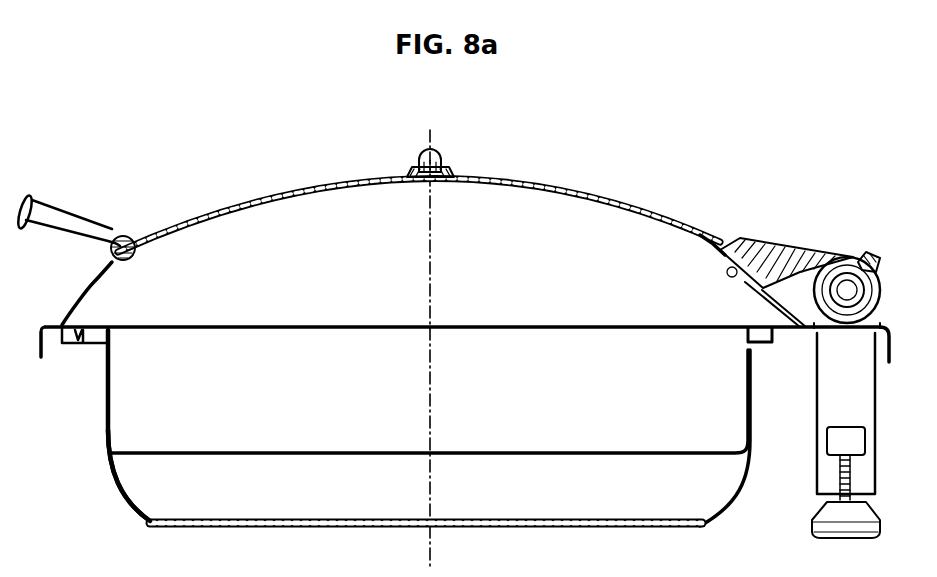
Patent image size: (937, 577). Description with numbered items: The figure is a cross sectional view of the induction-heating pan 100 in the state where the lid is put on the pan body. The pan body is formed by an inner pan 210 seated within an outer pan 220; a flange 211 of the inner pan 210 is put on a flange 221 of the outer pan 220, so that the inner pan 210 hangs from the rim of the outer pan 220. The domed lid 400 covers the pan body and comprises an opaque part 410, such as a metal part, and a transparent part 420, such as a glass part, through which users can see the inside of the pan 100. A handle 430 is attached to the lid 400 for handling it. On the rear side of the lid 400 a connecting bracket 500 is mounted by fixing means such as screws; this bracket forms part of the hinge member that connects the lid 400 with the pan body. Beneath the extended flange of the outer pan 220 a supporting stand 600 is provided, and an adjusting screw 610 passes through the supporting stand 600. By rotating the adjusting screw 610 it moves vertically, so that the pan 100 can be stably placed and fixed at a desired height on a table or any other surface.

The induction-heating pan 100 is at (232, 190).
The inner pan 210 is at (498, 455).
The flange of the inner pan 211 is at (99, 322).
The outer pan 220 is at (147, 517).
The flange of the outer pan 221 is at (89, 343).
The lid 400 is at (393, 225).
The opaque part 410 is at (101, 280).
The transparent part 420 is at (256, 199).
The handle 430 is at (65, 213).
The connecting bracket 500 is at (785, 248).
The supporting stand 600 is at (834, 448).
The adjusting screw 610 is at (836, 444).